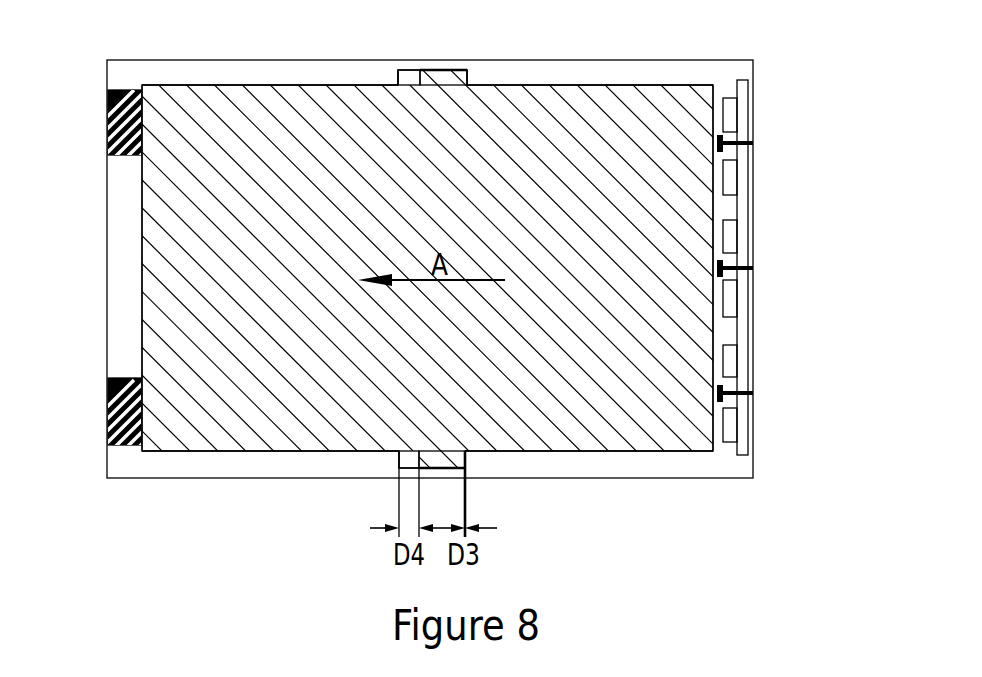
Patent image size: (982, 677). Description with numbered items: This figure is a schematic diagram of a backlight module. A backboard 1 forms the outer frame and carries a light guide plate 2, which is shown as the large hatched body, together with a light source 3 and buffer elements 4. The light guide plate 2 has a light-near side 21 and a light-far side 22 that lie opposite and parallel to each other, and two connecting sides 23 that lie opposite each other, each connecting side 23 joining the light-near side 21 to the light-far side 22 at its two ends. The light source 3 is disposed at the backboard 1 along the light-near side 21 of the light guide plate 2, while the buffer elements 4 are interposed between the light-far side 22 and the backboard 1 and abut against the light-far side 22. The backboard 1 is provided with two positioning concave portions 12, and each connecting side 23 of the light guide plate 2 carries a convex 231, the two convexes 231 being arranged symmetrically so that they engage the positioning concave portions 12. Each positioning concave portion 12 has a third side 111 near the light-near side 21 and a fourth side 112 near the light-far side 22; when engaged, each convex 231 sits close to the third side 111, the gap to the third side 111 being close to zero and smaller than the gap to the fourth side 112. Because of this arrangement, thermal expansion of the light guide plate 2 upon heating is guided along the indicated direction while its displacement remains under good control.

The backboard 1 is at (730, 70).
The light guide plate 2 is at (675, 97).
The light source 3 is at (730, 238).
The buffer element 4 is at (108, 127).
The positioning concave portion 12 is at (410, 76).
The light-near side 21 is at (713, 329).
The light-far side 22 is at (141, 197).
The connecting side 23 is at (593, 85).
The third side 111 is at (467, 78).
The fourth side 112 is at (398, 78).
The convex 231 is at (440, 78).